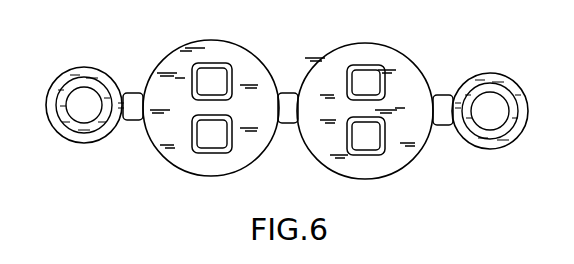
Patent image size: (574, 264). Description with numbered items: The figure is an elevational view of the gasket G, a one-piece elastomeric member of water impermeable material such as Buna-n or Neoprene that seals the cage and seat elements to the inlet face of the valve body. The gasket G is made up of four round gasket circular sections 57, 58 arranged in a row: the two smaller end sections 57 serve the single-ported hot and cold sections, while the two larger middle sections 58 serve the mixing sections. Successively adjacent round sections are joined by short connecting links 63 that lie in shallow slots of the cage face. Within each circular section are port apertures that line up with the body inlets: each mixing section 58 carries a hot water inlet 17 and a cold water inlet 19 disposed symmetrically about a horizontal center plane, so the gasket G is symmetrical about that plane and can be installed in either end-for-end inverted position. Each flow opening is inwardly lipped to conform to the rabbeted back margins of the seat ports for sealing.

The hot water inlet 17 is at (210, 140).
The cold water inlet 19 is at (77, 90).
The gasket circular section 57 is at (103, 135).
The gasket circular section 58 is at (313, 160).
The connecting link 63 is at (134, 95).
The gasket G is at (304, 53).